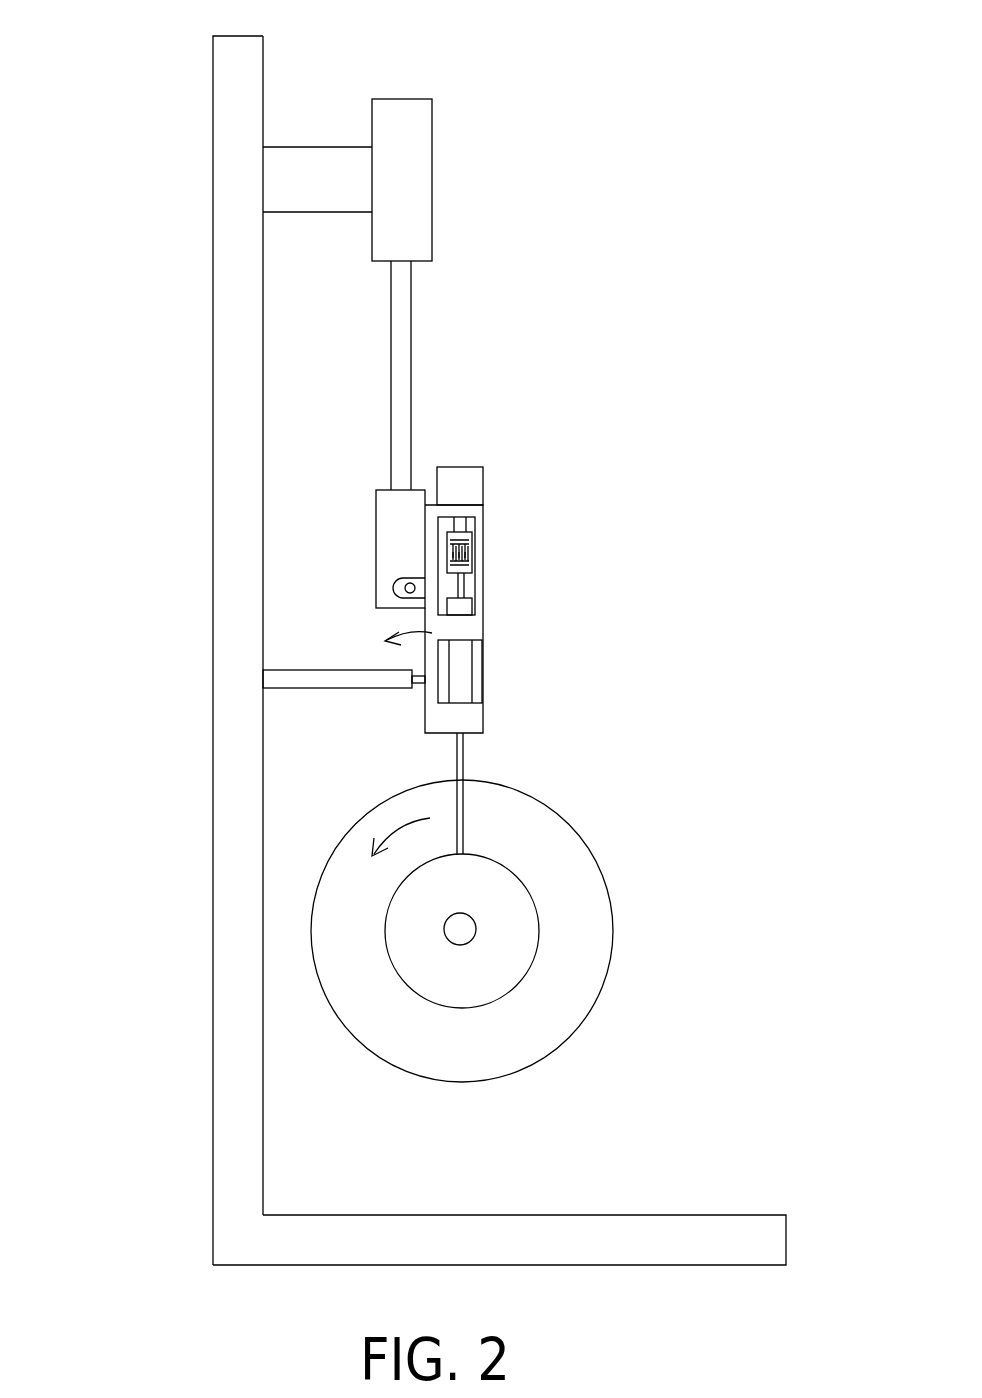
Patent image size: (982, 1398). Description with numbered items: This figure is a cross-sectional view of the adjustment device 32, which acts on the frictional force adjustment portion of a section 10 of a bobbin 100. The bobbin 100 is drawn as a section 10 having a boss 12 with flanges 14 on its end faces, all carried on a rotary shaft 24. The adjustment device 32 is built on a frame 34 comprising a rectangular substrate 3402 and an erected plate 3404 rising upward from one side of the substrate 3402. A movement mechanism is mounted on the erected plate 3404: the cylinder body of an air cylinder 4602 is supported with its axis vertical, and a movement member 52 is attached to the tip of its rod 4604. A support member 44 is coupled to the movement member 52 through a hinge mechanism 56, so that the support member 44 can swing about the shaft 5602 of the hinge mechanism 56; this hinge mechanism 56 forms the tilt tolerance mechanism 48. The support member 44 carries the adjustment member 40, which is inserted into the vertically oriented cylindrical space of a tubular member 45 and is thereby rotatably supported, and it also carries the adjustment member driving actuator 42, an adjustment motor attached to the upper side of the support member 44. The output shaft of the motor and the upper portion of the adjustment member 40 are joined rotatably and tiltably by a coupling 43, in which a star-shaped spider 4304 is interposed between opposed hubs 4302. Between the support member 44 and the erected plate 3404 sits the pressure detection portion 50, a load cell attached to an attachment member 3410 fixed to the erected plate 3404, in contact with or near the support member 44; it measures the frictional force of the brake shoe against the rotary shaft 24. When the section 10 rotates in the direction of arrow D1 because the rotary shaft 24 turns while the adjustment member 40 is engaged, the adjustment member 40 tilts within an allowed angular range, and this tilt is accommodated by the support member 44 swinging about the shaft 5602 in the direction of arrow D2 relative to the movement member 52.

The frame 34 is at (440, 654).
The erected plate 3404 is at (213, 317).
The substrate 3402 is at (575, 1265).
The adjustment device 32 is at (515, 80).
The air cylinder 4602 is at (432, 153).
The rod 4604 is at (411, 292).
The movement member 52 is at (354, 498).
The hinge mechanism 56 is at (410, 578).
The shaft 5602 is at (405, 587).
The tilt tolerance mechanism 48 is at (385, 587).
The adjustment member driving actuator 42 is at (451, 560).
The coupling 43 is at (525, 540).
The hubs 4302 is at (474, 542).
The spider 4304 is at (474, 553).
The tubular member 45 is at (466, 677).
The support member 44 is at (432, 630).
The arrow D2 is at (380, 681).
The attachment member 3410 is at (310, 670).
The pressure detection portion 50 is at (418, 692).
The adjustment member 40 is at (466, 749).
The bobbin 100 is at (541, 918).
The section 10 is at (492, 918).
The flange 14 is at (606, 870).
The boss 12 is at (535, 955).
The rotary shaft 24 is at (472, 940).
The arrow D1 is at (365, 813).